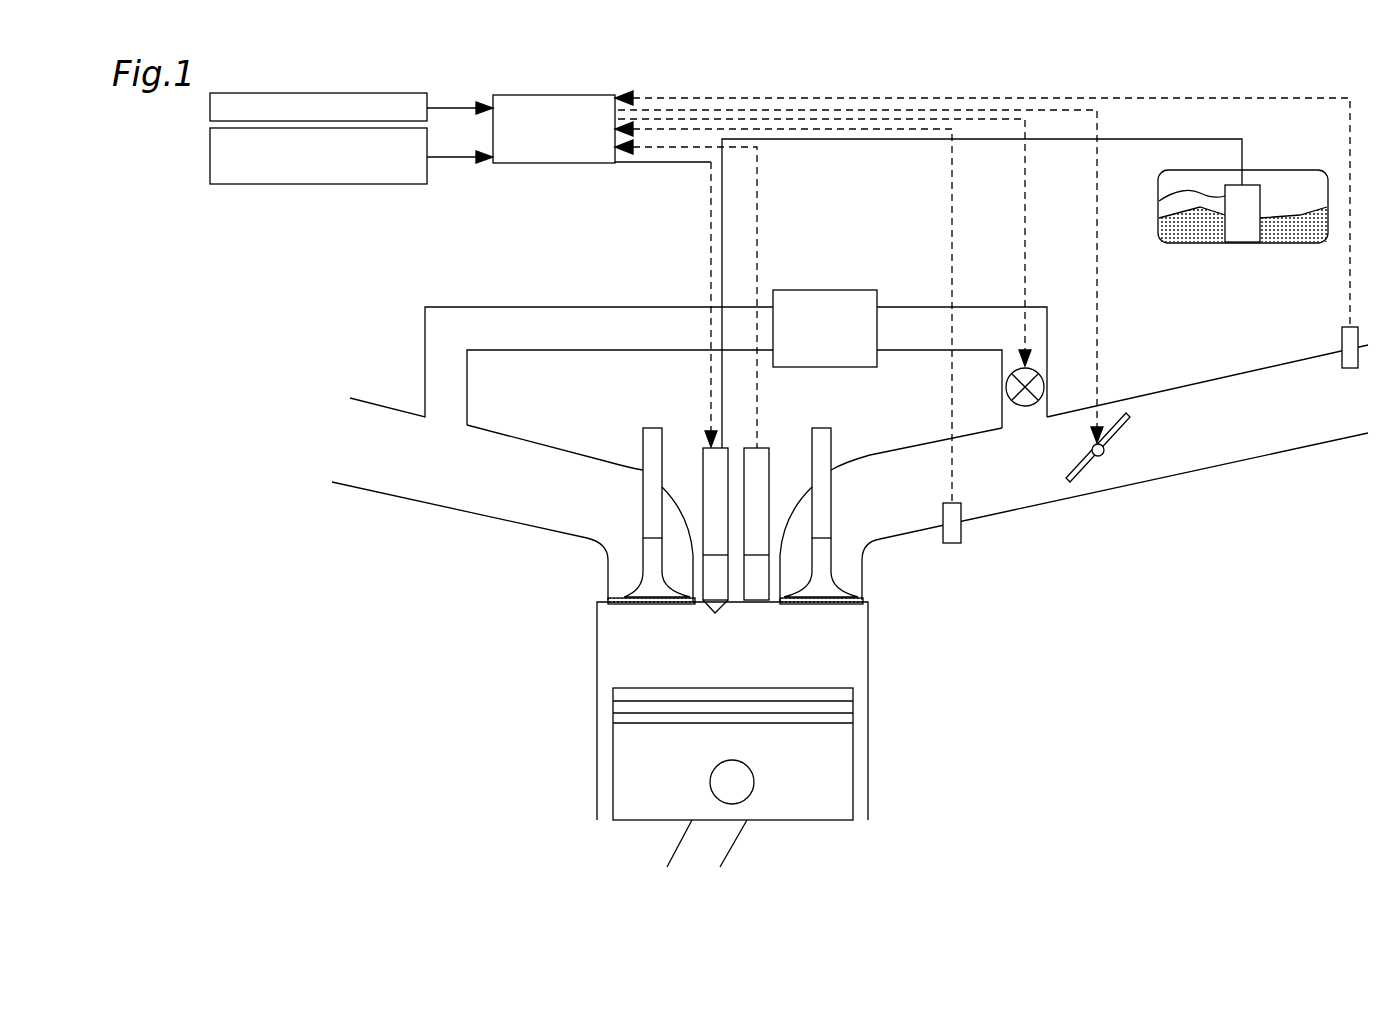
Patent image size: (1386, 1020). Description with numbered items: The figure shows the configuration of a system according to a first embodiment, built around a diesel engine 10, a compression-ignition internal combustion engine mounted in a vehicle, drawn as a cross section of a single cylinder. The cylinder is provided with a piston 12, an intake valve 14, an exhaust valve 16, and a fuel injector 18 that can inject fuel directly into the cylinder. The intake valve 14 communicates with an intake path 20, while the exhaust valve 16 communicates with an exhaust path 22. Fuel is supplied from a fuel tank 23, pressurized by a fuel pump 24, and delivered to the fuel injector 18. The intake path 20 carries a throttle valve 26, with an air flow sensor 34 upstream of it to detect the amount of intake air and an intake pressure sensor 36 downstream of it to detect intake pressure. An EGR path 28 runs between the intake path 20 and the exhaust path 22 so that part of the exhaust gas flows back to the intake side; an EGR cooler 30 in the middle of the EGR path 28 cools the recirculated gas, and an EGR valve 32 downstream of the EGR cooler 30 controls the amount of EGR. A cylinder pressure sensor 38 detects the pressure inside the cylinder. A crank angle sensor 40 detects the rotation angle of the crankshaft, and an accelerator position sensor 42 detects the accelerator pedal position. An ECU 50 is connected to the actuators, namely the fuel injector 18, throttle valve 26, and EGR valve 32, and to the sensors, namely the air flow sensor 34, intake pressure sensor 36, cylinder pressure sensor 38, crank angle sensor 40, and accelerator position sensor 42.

The diesel engine 10 is at (888, 719).
The piston 12 is at (650, 753).
The intake valve 14 is at (836, 580).
The exhaust valve 16 is at (636, 578).
The fuel injector 18 is at (698, 462).
The intake path 20 is at (1170, 478).
The exhaust path 22 is at (418, 503).
The fuel tank 23 is at (1290, 170).
The fuel pump 24 is at (1160, 201).
The throttle valve 26 is at (1075, 482).
The EGR path 28 is at (602, 306).
The EGR cooler 30 is at (840, 290).
The EGR valve 32 is at (1038, 384).
The air flow sensor 34 is at (1342, 336).
The intake pressure sensor 36 is at (962, 535).
The cylinder pressure sensor 38 is at (772, 462).
The crank angle sensor 40 is at (387, 93).
The accelerator position sensor 42 is at (377, 183).
The ECU 50 is at (570, 94).